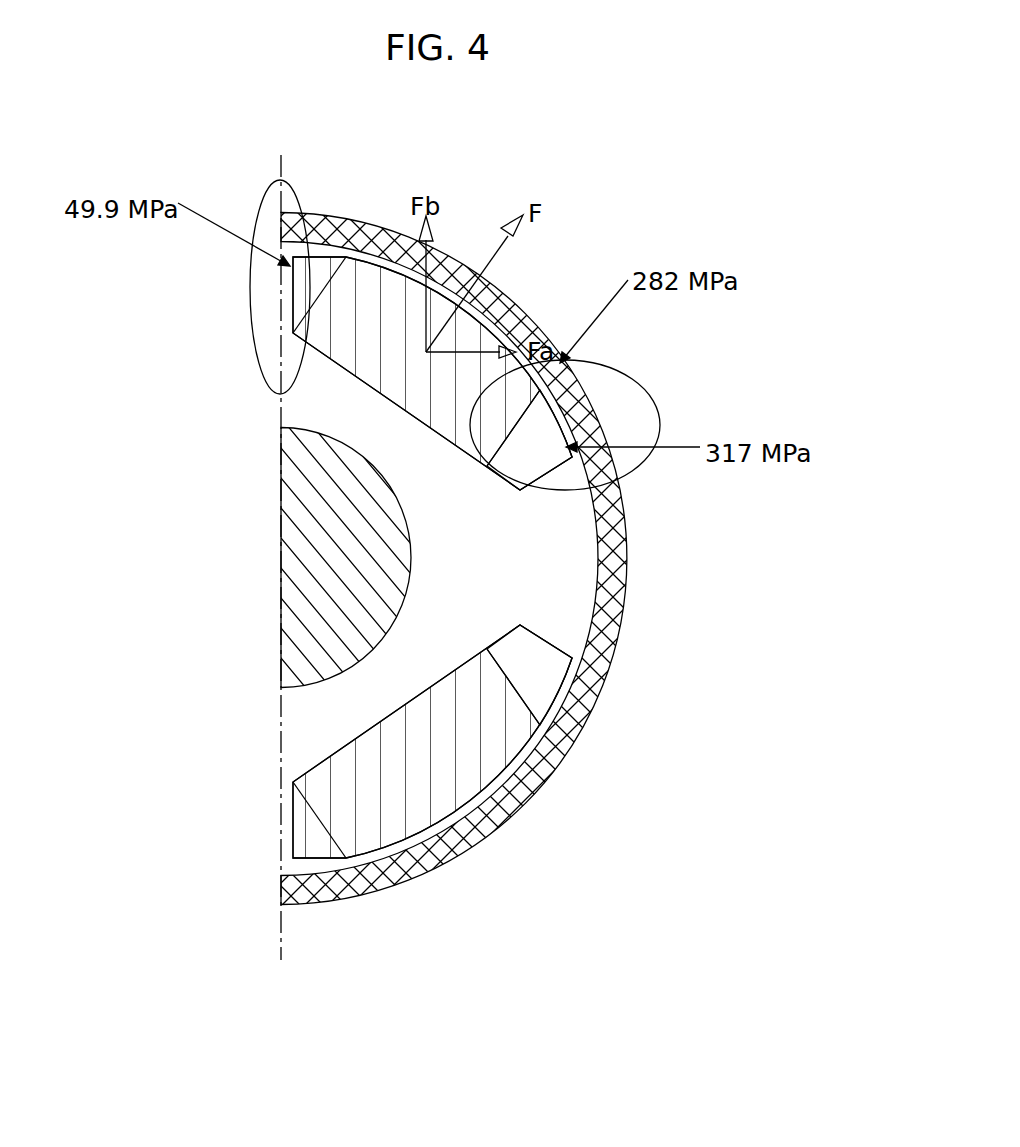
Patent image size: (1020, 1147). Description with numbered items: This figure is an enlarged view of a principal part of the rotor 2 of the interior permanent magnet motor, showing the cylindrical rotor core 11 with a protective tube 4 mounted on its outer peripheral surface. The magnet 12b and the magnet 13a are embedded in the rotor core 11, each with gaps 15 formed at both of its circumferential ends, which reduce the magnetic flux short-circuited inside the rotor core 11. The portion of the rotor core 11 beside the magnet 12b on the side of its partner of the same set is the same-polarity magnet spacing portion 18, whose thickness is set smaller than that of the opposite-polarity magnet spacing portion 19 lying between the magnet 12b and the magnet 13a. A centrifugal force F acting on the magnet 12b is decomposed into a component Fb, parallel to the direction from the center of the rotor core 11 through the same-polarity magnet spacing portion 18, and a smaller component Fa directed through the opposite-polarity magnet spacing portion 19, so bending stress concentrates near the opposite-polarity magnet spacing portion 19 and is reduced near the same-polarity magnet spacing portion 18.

The rotor 2 is at (573, 572).
The protective tube 4 is at (516, 308).
The rotor core 11 is at (300, 406).
The magnet 12b is at (390, 297).
The magnet 13a is at (468, 840).
The gap 15 is at (328, 268).
The same-polarity magnet spacing portion 18 is at (288, 293).
The opposite-polarity magnet spacing portion 19 is at (533, 532).